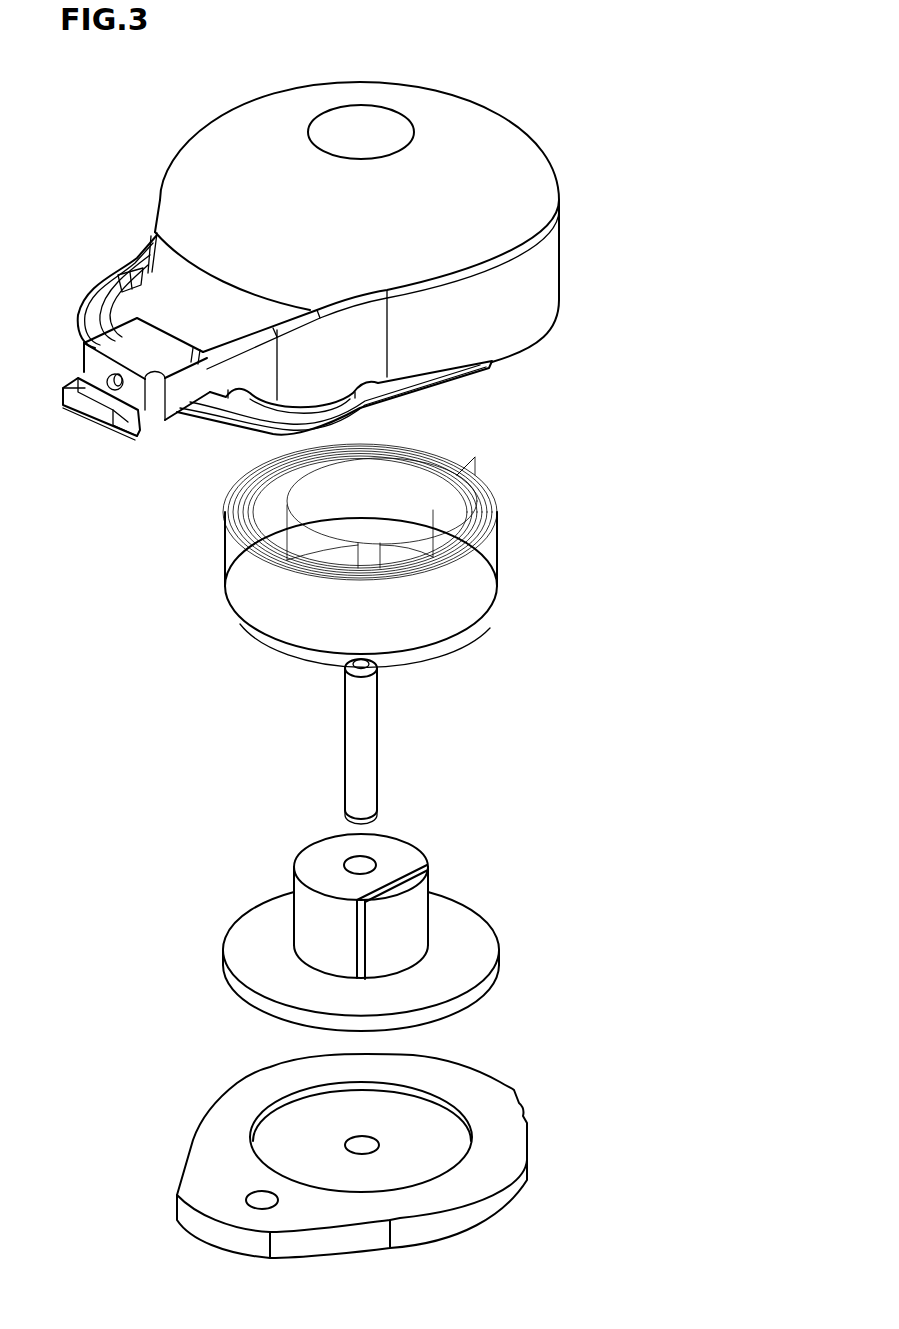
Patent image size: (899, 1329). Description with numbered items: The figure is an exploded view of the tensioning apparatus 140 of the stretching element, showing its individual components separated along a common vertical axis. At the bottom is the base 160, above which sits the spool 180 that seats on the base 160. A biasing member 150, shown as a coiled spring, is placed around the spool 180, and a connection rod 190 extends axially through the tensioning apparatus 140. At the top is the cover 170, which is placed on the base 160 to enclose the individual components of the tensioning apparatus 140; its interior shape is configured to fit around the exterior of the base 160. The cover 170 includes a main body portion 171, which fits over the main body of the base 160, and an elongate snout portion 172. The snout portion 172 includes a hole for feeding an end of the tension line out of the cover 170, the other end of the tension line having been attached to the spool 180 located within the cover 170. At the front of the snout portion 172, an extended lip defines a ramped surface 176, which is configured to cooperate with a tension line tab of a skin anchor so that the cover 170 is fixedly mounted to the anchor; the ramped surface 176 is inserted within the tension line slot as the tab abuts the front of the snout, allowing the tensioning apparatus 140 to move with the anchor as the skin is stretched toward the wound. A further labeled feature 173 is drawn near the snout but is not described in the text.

The tensioning apparatus 140 is at (657, 198).
The biasing member 150 is at (495, 553).
The base 160 is at (573, 1186).
The cover 170 is at (575, 107).
The main body portion 171 is at (538, 320).
The snout portion 172 is at (199, 412).
The hinge block 173 is at (142, 432).
The ramped surface 176 is at (100, 410).
The spool 180 is at (550, 959).
The connection rod 190 is at (408, 745).